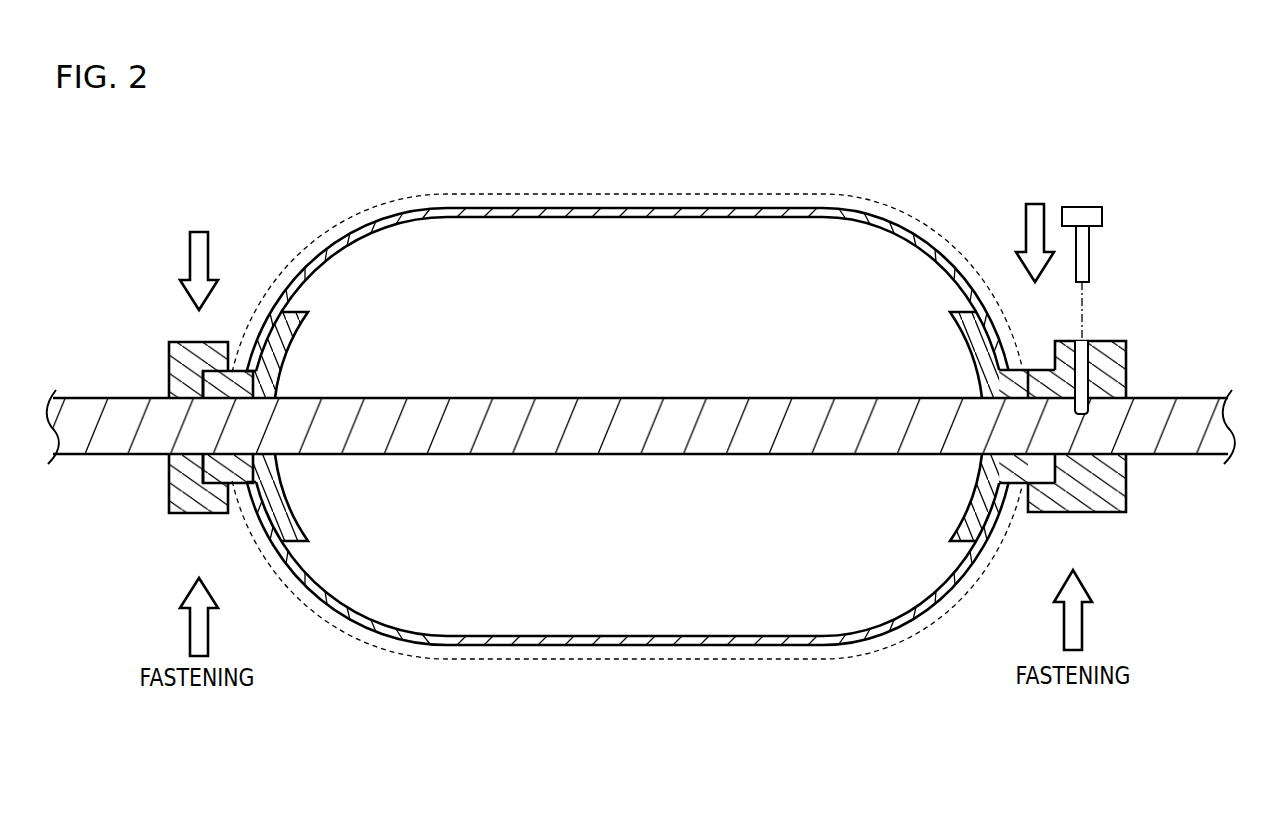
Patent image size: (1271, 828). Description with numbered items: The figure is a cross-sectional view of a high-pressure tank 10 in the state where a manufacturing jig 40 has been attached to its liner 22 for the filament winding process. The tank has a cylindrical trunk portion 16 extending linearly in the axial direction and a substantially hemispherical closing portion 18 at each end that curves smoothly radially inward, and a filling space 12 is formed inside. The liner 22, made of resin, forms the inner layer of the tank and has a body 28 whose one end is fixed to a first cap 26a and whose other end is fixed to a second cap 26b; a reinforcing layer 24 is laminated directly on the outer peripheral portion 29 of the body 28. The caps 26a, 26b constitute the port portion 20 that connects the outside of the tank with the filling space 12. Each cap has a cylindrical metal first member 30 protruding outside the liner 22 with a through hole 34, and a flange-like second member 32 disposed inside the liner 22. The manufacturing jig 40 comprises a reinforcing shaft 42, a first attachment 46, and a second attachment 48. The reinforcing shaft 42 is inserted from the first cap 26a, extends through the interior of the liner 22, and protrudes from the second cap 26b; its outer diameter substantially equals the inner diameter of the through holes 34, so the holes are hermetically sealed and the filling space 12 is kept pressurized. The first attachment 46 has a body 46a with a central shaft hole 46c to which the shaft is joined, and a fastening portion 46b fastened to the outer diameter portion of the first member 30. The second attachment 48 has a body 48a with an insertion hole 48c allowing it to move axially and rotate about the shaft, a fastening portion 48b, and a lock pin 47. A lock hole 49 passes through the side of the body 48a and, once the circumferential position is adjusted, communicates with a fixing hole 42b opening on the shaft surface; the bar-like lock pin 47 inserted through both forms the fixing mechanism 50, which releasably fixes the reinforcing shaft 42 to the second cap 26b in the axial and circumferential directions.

The high-pressure tank 10 is at (372, 144).
The filling space 12 is at (663, 354).
The trunk portion 16 is at (768, 210).
The closing portion 18 is at (312, 262).
The port portion 20 is at (633, 459).
The liner 22 is at (376, 214).
The reinforcing layer 24 is at (682, 193).
The first cap 26a is at (247, 470).
The second cap 26b is at (1018, 475).
The body 28 is at (527, 212).
The outer peripheral portion 29 is at (614, 212).
The first member 30 is at (226, 472).
The second member 32 is at (285, 507).
The through hole 34 is at (273, 430).
The manufacturing jig 40 is at (1190, 223).
The reinforcing shaft 42 is at (509, 421).
The fixing hole 42b is at (1105, 402).
The first attachment 46 is at (197, 355).
The body 46a is at (182, 380).
The fastening portion 46b is at (205, 496).
The shaft hole 46c is at (190, 452).
The lock pin 47 is at (1085, 233).
The second attachment 48 is at (1110, 355).
The body 48a is at (1105, 500).
The fastening portion 48b is at (1042, 495).
The insertion hole 48c is at (1133, 430).
The lock hole 49 is at (1083, 347).
The fixing mechanism 50 is at (1123, 250).